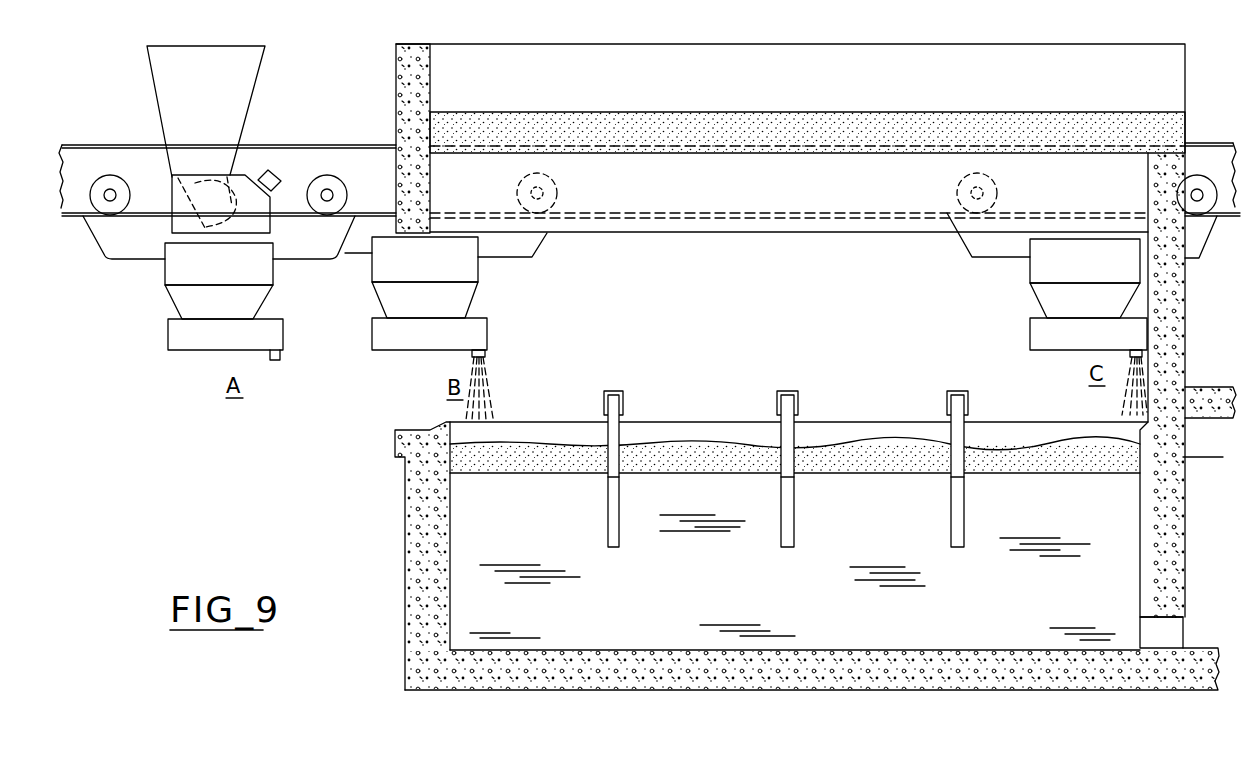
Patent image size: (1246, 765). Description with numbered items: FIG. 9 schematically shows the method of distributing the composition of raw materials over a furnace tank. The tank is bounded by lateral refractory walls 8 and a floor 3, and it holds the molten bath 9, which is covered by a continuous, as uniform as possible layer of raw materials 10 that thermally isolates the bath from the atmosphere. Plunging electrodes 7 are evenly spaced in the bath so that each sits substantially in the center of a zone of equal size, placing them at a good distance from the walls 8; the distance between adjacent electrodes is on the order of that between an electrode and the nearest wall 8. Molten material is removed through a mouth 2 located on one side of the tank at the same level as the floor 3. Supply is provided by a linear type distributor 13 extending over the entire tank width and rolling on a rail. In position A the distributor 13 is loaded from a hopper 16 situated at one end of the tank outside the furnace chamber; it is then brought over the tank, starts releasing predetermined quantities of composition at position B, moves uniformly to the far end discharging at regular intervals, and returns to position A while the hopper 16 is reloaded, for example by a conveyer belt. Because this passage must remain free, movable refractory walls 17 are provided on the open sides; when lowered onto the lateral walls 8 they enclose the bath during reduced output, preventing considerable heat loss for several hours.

The hopper 16 is at (158, 102).
The movable refractory wall 17 is at (398, 103).
The linear type distributor 13 is at (158, 311).
The plunging electrode 7 is at (608, 516).
The layer of raw materials 10 is at (705, 460).
The molten bath 9 is at (885, 536).
The floor 3 is at (646, 668).
The lateral refractory wall 8 is at (418, 553).
The mouth 2 is at (1169, 646).